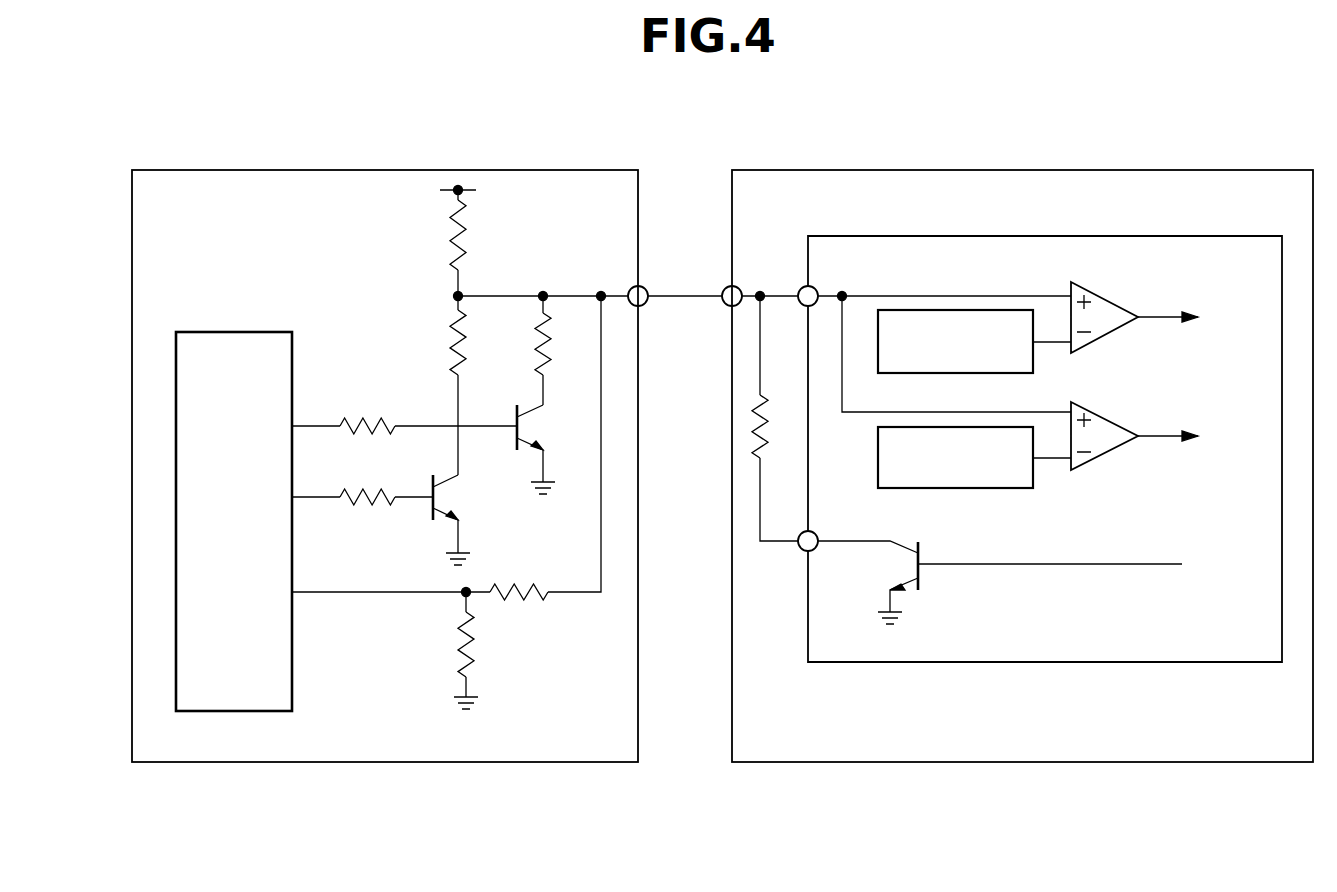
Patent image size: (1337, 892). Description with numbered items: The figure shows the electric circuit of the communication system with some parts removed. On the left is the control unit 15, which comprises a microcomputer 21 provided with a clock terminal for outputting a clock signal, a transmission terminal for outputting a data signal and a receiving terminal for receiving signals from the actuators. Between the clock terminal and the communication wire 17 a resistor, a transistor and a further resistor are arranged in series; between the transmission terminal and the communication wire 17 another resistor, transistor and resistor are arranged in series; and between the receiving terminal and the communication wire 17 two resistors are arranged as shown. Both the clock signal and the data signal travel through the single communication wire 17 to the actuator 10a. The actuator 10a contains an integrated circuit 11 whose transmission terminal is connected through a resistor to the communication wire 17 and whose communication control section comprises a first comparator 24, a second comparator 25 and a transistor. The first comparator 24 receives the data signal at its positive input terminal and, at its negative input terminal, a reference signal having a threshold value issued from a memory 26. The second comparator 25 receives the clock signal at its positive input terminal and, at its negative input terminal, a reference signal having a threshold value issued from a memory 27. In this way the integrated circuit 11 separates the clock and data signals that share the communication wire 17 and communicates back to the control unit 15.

The control unit 15 is at (491, 170).
The microcomputer (CPU) 21 is at (233, 332).
The communication wire 17 is at (680, 296).
The actuator 10a is at (1076, 170).
The integrated circuit 11 is at (1015, 236).
The memory 26 is at (957, 310).
The memory 27 is at (1000, 488).
The first comparator 24 is at (1117, 302).
The second comparator 25 is at (1120, 420).